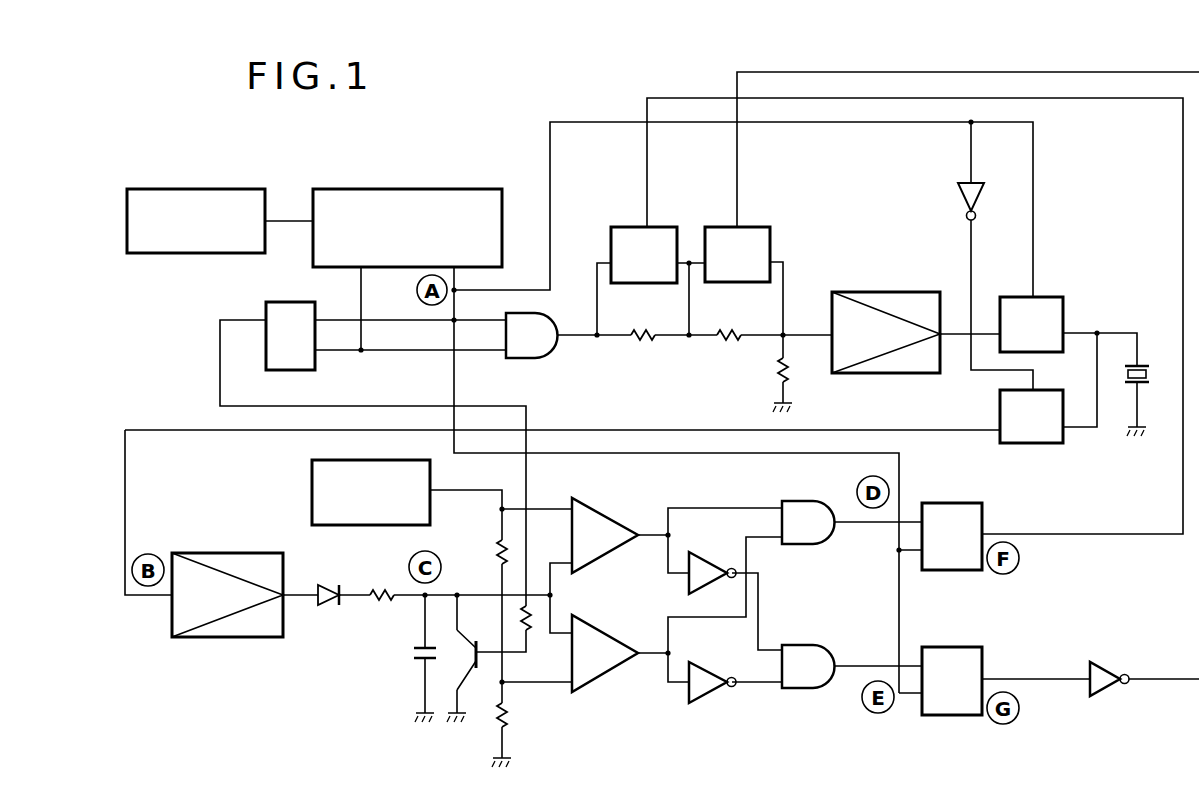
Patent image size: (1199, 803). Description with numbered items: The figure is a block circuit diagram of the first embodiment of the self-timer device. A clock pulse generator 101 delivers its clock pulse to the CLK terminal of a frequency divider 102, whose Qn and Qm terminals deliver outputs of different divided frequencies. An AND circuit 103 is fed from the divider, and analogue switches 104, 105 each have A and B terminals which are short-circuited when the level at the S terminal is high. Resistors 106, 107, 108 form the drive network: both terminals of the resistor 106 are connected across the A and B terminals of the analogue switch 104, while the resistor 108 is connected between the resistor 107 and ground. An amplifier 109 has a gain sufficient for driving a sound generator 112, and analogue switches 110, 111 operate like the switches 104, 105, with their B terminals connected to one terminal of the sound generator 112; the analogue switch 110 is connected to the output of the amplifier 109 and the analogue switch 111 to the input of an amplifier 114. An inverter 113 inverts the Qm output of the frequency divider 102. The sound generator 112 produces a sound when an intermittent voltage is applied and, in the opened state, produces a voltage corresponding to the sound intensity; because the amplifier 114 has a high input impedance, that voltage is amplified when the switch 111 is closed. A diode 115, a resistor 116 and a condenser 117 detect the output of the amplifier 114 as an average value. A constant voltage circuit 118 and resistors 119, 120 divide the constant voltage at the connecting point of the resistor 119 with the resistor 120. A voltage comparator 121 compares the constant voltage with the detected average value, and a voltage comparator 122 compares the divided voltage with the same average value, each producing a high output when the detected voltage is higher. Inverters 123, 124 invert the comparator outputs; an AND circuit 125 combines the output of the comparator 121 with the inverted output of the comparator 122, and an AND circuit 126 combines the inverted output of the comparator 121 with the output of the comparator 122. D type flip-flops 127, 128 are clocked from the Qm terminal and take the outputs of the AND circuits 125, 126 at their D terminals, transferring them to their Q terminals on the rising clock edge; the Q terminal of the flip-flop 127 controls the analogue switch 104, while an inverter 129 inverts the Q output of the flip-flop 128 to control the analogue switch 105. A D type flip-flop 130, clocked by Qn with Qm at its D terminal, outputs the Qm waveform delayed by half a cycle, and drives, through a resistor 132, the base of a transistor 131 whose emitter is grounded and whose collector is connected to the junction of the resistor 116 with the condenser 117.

The clock pulse generator 101 is at (252, 189).
The frequency divider 102 is at (474, 189).
The AND circuit 103 is at (545, 358).
The analogue switch 104 is at (677, 232).
The analogue switch 105 is at (757, 228).
The resistor 106 is at (642, 345).
The resistor 107 is at (728, 343).
The resistor 108 is at (790, 372).
The amplifier 109 is at (887, 292).
The analogue switch 110 is at (1066, 315).
The analogue switch 111 is at (1052, 443).
The sound generator 112 is at (1150, 370).
The inverter 113 is at (979, 186).
The amplifier 114 is at (232, 637).
The diode 115 is at (329, 606).
The resistor 116 is at (380, 602).
The condenser 117 is at (414, 654).
The constant voltage circuit 118 is at (312, 487).
The resistor 119 is at (498, 553).
The resistor 120 is at (509, 712).
The voltage comparator 121 is at (618, 521).
The voltage comparator 122 is at (619, 637).
The inverter 123 is at (707, 552).
The inverter 124 is at (711, 653).
The AND circuit 125 is at (797, 501).
The AND circuit 126 is at (797, 645).
The D type flip-flop 127 is at (957, 503).
The D type flip-flop 128 is at (957, 647).
The inverter 129 is at (1108, 664).
The D type flip-flop 130 is at (315, 370).
The transistor 131 is at (470, 642).
The resistor 132 is at (532, 622).